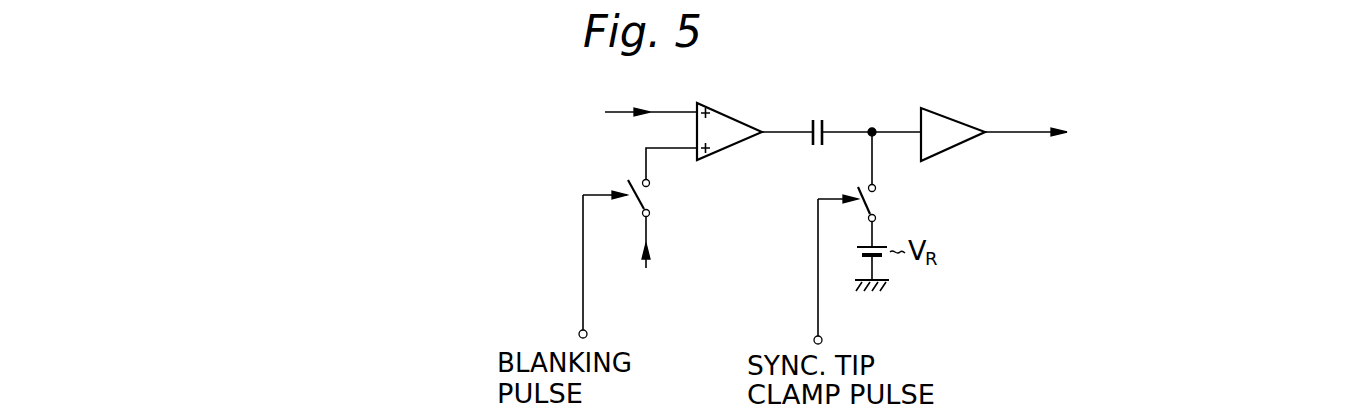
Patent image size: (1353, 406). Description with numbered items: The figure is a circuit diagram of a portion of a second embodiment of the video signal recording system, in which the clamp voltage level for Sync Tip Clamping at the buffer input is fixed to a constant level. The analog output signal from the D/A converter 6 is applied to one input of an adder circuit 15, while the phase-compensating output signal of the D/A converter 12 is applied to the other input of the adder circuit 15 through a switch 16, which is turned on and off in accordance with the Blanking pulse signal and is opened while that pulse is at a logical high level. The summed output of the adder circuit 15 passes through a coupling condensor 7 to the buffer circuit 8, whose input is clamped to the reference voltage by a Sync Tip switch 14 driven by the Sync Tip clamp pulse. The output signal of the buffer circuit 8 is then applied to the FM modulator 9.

The D/A converter 6 is at (562, 93).
The coupling condensor 7 is at (815, 118).
The buffer circuit 8 is at (955, 119).
The FM modulator 9 is at (1151, 137).
The D/A converter 12 is at (680, 302).
The Sync Tip switch 14 is at (876, 203).
The adder circuit 15 is at (732, 113).
The switch 16 is at (651, 199).